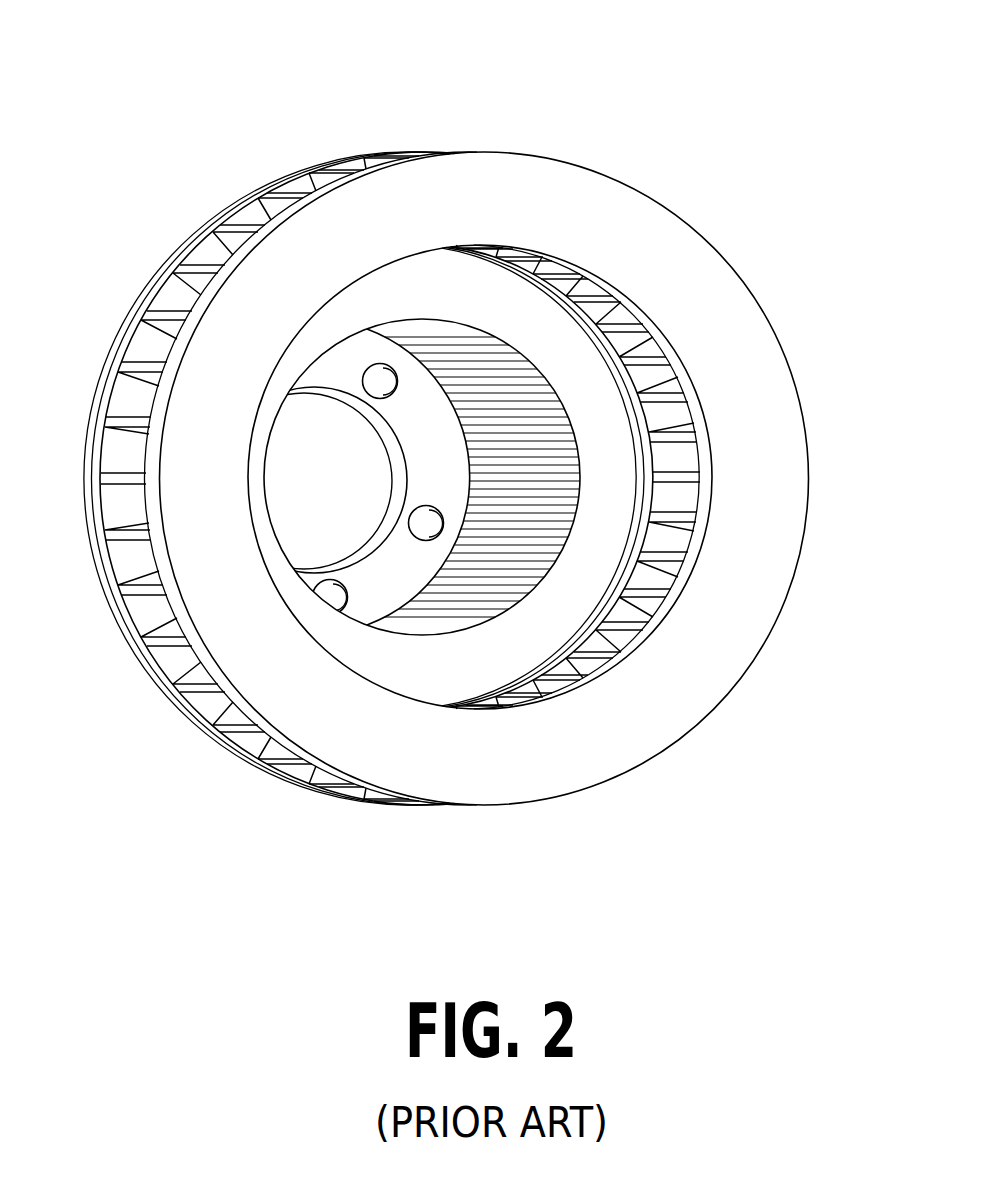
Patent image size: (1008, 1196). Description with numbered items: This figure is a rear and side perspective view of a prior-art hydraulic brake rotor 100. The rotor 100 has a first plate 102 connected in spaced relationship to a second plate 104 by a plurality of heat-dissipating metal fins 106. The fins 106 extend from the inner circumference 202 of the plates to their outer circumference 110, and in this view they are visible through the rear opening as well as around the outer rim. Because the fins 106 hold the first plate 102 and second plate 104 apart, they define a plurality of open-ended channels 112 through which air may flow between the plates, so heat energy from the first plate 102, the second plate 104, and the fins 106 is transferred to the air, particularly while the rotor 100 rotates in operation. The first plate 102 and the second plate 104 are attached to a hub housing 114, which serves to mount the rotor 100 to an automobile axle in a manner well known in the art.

The rotor 100 is at (657, 136).
The first plate 102 is at (253, 193).
The second plate 104 is at (474, 179).
The heat-dissipating metal fins 106 is at (165, 327).
The outer circumference 110 is at (653, 786).
The open-ended channels 112 is at (712, 500).
The hub housing 114 is at (358, 592).
The inner circumference 202 is at (675, 640).